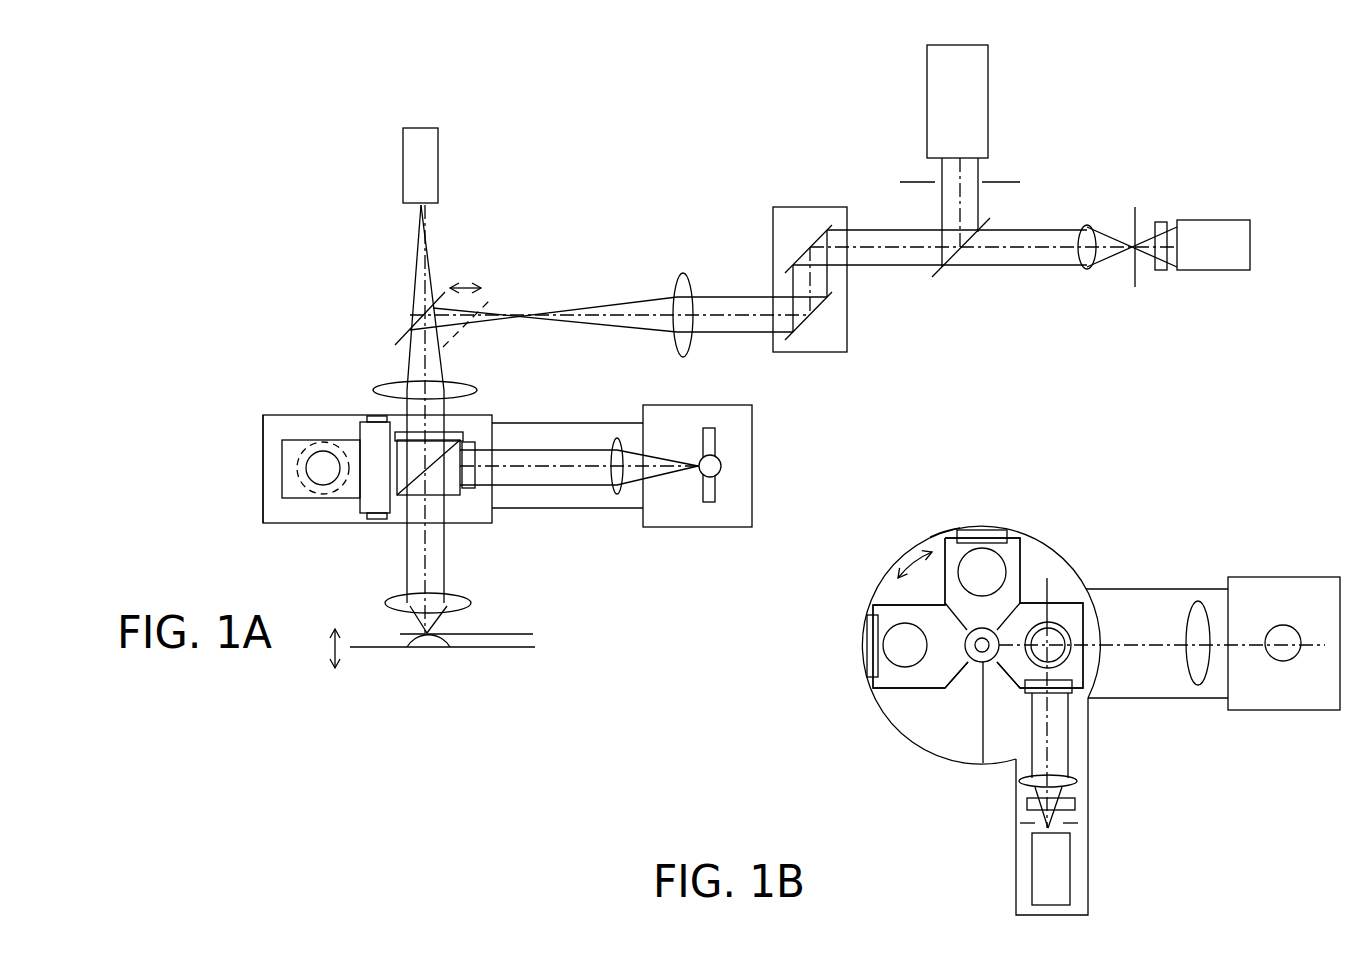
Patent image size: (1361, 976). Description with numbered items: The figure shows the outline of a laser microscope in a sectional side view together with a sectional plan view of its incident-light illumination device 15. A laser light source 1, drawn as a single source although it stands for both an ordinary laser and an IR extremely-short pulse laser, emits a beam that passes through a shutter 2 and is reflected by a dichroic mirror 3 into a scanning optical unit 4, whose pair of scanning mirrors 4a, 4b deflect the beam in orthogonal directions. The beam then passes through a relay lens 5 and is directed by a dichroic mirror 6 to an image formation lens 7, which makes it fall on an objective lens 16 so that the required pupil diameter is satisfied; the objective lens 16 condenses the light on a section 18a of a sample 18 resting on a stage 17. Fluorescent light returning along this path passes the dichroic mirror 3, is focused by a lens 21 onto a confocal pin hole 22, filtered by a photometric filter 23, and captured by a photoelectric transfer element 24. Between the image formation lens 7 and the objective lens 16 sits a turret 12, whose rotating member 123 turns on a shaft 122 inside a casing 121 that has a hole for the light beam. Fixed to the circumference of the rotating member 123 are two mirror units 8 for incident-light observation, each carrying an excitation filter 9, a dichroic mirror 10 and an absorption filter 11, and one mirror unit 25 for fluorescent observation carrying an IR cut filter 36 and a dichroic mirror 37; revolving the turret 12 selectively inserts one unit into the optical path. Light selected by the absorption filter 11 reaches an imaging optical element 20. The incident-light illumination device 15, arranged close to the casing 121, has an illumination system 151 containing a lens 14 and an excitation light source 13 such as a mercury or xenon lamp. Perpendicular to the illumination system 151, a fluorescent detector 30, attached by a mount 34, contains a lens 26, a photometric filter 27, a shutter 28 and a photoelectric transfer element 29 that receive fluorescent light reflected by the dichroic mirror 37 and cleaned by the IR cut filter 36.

In FIG. 1A, the laser light source 1 is at (988, 100).
In FIG. 1A, the shutter 2 is at (913, 180).
In FIG. 1A, the dichroic mirror 3 is at (985, 222).
In FIG. 1A, the scanning optical unit 4 is at (807, 207).
In FIG. 1A, the scanning mirror 4a is at (789, 270).
In FIG. 1A, the scanning mirror 4b is at (805, 342).
In FIG. 1A, the relay lens 5 is at (683, 272).
In FIG. 1A, the dichroic mirror 6 is at (404, 336).
In FIG. 1A, the image formation lens 7 is at (456, 381).
In FIG. 1A, the mirror unit 8 is at (402, 464).
In FIG. 1B, the mirror unit 8 is at (1026, 566).
In FIG. 1A, the excitation filter 9 is at (473, 490).
In FIG. 1B, the excitation filter 9 is at (995, 530).
In FIG. 1A, the dichroic mirror 10 is at (399, 497).
In FIG. 1A, the absorption filter 11 is at (452, 440).
In FIG. 1B, the absorption filter 11 is at (1002, 556).
In FIG. 1A, the turret 12 is at (320, 408).
In FIG. 1B, the turret 12 is at (904, 545).
In FIG. 1A, the casing 121 is at (288, 413).
In FIG. 1B, the casing 121 is at (937, 528).
In FIG. 1A, the shaft 122 is at (372, 416).
In FIG. 1B, the shaft 122 is at (982, 662).
In FIG. 1A, the rotating member 123 is at (371, 505).
In FIG. 1B, the rotating member 123 is at (979, 661).
In FIG. 1A, the excitation light source 13 is at (722, 466).
In FIG. 1B, the excitation light source 13 is at (1285, 661).
In FIG. 1A, the lens 14 is at (617, 437).
In FIG. 1B, the lens 14 is at (1205, 680).
In FIG. 1A, the incident-light illumination device 15 is at (574, 512).
In FIG. 1B, the incident-light illumination device 15 is at (1158, 602).
In FIG. 1A, the illumination system 151 is at (553, 462).
In FIG. 1B, the illumination system 151 is at (1170, 648).
In FIG. 1A, the objective lens 16 is at (471, 603).
In FIG. 1A, the stage 17 is at (365, 646).
In FIG. 1A, the sample 18 is at (413, 650).
In FIG. 1A, the section of the sample 18a is at (510, 633).
In FIG. 1A, the imaging optical element 20 is at (438, 160).
In FIG. 1A, the lens 21 is at (1087, 224).
In FIG. 1A, the confocal pin hole 22 is at (1140, 212).
In FIG. 1A, the photometric filter 23 is at (1160, 272).
In FIG. 1A, the photoelectric transfer element 24 is at (1217, 272).
In FIG. 1A, the mirror unit 25 is at (292, 456).
In FIG. 1B, the mirror unit 25 is at (1080, 671).
In FIG. 1B, the lens 26 is at (1077, 782).
In FIG. 1B, the photometric filter 27 is at (1076, 806).
In FIG. 1B, the shutter 28 is at (1068, 822).
In FIG. 1B, the photoelectric transfer element 29 is at (1050, 862).
In FIG. 1B, the fluorescent detector 30 is at (1012, 892).
In FIG. 1B, the mount 34 is at (1090, 745).
In FIG. 1A, the IR cut filter 36 is at (298, 480).
In FIG. 1B, the IR cut filter 36 is at (1040, 690).
In FIG. 1A, the dichroic mirror 37 is at (318, 482).
In FIG. 1B, the dichroic mirror 37 is at (1059, 634).